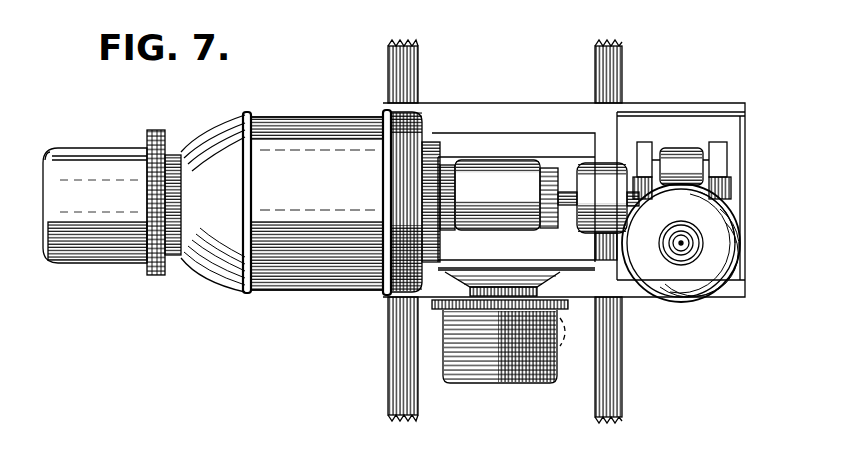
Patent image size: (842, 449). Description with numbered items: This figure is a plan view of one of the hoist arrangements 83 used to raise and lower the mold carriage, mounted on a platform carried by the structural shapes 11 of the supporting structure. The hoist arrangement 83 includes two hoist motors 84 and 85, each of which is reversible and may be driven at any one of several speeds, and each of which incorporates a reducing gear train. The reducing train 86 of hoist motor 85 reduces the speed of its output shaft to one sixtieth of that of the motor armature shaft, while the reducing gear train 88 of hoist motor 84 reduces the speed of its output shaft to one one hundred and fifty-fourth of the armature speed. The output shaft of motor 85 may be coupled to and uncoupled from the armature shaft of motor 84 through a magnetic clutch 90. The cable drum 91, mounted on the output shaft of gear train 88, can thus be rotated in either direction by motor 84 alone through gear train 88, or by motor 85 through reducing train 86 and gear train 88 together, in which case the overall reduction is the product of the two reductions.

The structural shapes 11 is at (612, 80).
The hoist arrangement 83 is at (245, 318).
The hoist motor 84 is at (314, 131).
The hoist motor 85 is at (719, 249).
The reducing train 86 is at (688, 172).
The reducing gear train 88 is at (478, 172).
The magnetic clutch 90 is at (598, 184).
The cable drum 91 is at (488, 362).